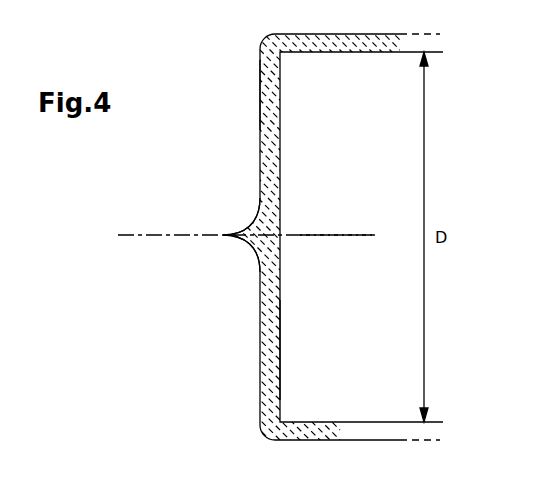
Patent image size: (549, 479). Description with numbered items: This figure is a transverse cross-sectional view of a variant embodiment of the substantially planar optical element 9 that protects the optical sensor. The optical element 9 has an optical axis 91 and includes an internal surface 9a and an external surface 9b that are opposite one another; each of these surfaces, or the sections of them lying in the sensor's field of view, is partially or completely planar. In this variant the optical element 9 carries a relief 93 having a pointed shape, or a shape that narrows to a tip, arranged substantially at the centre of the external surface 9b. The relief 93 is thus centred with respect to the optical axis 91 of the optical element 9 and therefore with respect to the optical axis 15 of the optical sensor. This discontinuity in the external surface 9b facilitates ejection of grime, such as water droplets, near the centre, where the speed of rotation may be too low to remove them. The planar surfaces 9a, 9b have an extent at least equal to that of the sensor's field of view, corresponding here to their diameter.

The optical element 9 is at (220, 325).
The internal surface 9a is at (281, 338).
The external surface 9b is at (260, 95).
The relief 93 is at (223, 233).
The optical axis 91 is at (138, 237).
The optical axis of the optical sensor 15 is at (340, 234).